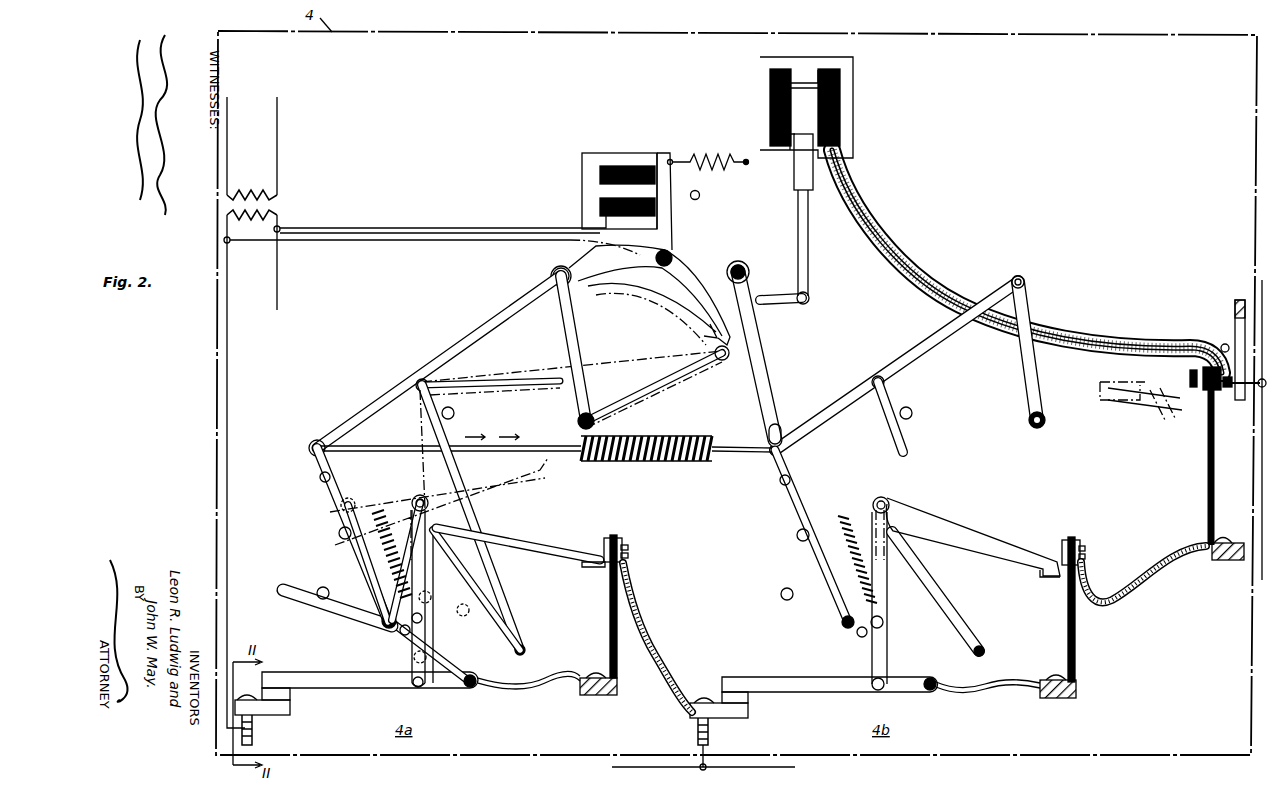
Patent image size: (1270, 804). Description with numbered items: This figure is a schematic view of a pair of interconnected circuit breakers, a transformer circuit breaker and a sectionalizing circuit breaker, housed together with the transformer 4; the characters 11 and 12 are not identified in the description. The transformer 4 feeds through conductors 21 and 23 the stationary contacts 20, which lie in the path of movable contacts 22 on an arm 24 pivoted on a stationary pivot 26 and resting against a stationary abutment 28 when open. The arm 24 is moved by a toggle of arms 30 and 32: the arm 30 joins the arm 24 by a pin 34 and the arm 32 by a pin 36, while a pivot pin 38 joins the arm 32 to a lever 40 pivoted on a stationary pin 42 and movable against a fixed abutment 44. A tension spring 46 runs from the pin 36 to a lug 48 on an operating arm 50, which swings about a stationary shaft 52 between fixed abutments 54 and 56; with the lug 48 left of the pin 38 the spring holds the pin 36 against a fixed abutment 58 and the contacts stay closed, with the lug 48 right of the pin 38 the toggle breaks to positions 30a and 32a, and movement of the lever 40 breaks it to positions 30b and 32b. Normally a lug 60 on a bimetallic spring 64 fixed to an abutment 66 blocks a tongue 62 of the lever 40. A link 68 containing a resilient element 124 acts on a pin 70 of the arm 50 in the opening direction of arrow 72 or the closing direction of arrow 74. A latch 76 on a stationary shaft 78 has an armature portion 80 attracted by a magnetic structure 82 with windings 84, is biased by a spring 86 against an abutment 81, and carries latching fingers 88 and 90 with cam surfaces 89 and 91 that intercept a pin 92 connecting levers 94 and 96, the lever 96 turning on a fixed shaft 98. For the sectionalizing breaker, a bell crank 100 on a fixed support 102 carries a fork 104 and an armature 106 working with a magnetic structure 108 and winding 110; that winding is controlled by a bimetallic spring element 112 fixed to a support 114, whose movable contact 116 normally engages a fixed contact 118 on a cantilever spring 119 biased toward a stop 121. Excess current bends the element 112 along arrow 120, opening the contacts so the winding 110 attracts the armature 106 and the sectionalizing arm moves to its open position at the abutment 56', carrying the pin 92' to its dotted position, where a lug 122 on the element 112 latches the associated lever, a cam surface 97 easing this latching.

The transformer 4 is at (275, 210).
The section line 11 is at (772, 767).
The frame 12 is at (1262, 492).
The stationary contacts 20 is at (290, 710).
The conductor 21 is at (224, 298).
The movable contacts 22 is at (290, 695).
The conductor 23 is at (276, 285).
The arm 24 is at (370, 630).
The stationary pivot 26 is at (476, 688).
The stationary abutment 28 is at (330, 590).
The arm 30 is at (410, 660).
The dotted-line position of arm 30 30a is at (440, 658).
The dotted-line position of arm 30 30b is at (445, 640).
The arm 32 is at (445, 566).
The dotted-line position of arm 32 32a is at (430, 540).
The dotted-line position of arm 32 32b is at (372, 552).
The pin 34 is at (425, 688).
The pin 36 is at (440, 622).
The pivot pin 38 is at (420, 495).
The lever 40 is at (520, 470).
The stationary pin 42 is at (380, 608).
The fixed abutment 44 is at (338, 532).
The tension spring 46 is at (372, 562).
The lug 48 is at (380, 485).
The operating arm 50 is at (340, 485).
The stationary shaft 52 is at (527, 655).
The fixed abutment 54 is at (318, 475).
The fixed abutment 56 is at (464, 412).
The fixed abutment 58 is at (398, 636).
The lug 60 is at (620, 520).
The tongue 62 is at (596, 552).
The bimetallic spring 64 is at (617, 652).
The abutment 66 is at (608, 696).
The link 68 is at (400, 446).
The pin 70 is at (309, 448).
The arrow 72 is at (475, 430).
The arrow 74 is at (508, 430).
The latch 76 is at (716, 264).
The stationary shaft 78 is at (671, 258).
The armature portion 80 is at (672, 180).
The abutment 81 is at (700, 197).
The magnetic structure 82 is at (582, 183).
The energizing windings 84 is at (630, 165).
The spring 86 is at (718, 160).
The latching finger 88 is at (572, 276).
The cam surface 89 is at (570, 282).
The latching finger 90 is at (712, 330).
The cam surface 91 is at (706, 340).
The pin 92 is at (537, 275).
The lever 94 is at (468, 330).
The lever 96 is at (578, 326).
The fixed shaft 98 is at (576, 424).
The bell crank 100 is at (770, 340).
The fixed support 102 is at (742, 264).
The fork 104 is at (782, 428).
The armature 106 is at (792, 182).
The magnetic structure 108 is at (760, 97).
The energizing winding 110 is at (842, 100).
The bimetallic spring element 112 is at (1207, 492).
The fixed support 114 is at (1214, 558).
The movable contact 116 is at (1215, 395).
The fixed contact 118 is at (1219, 393).
The cantilever spring 119 is at (1239, 350).
The arrow 120 is at (1218, 345).
The stop 121 is at (1238, 376).
The lug 122 is at (1195, 378).
The resilient element 124 is at (600, 462).
The fixed abutment 56' is at (923, 416).
The pin 92' is at (1094, 348).
The cam surface 97 is at (1012, 277).